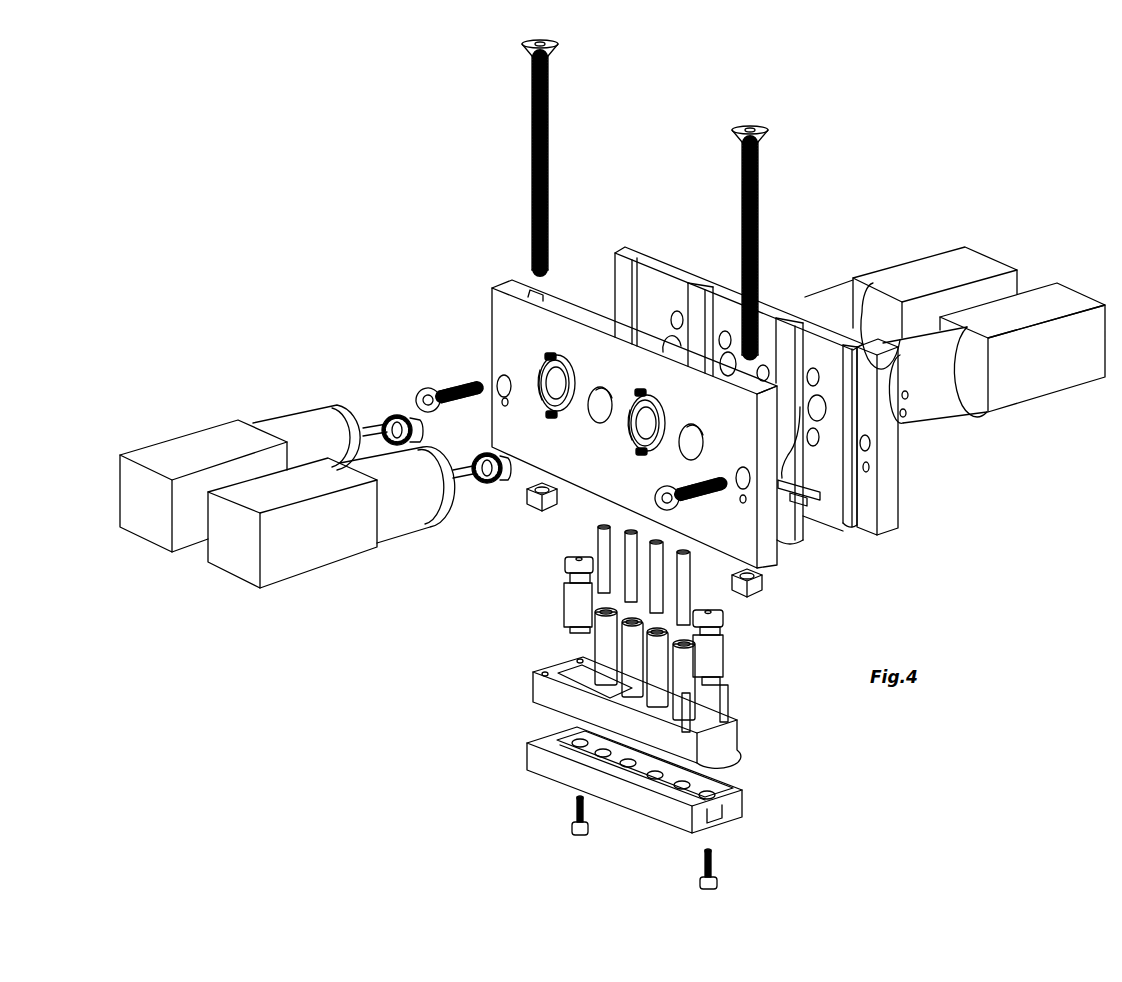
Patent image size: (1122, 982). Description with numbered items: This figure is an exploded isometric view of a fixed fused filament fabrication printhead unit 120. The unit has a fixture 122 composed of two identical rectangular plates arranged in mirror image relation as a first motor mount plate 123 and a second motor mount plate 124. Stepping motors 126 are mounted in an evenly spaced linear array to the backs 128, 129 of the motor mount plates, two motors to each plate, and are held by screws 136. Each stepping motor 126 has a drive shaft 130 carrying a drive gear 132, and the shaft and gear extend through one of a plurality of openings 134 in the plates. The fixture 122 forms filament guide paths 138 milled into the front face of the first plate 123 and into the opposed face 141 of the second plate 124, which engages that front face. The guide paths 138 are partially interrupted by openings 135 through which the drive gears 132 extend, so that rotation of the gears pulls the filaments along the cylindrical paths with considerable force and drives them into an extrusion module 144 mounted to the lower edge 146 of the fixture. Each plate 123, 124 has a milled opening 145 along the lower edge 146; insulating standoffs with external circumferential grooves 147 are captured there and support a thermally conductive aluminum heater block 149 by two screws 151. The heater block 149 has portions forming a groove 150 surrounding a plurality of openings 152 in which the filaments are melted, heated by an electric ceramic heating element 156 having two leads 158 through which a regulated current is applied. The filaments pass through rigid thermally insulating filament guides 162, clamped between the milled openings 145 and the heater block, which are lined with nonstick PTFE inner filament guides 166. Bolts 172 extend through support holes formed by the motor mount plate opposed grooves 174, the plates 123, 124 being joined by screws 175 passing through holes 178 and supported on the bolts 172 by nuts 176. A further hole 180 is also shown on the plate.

The fixed fused filament fabrication printhead unit 120 is at (893, 232).
The fixture 122 is at (487, 240).
The first motor mount plate 123 is at (562, 292).
The second motor mount plate 124 is at (490, 316).
The stepping motor 126 is at (612, 417).
The back of motor mount plate 128 is at (762, 283).
The back of motor mount plate 129 is at (622, 492).
The drive shaft 130 is at (370, 428).
The drive gear 132 is at (394, 415).
The opening 134 is at (543, 390).
The opening 135 is at (597, 393).
The screw 136 is at (556, 355).
The filament guide path 138 is at (590, 312).
The opposed face 141 is at (620, 318).
The extrusion module 144 is at (525, 630).
The milled opening 145 is at (822, 494).
The lower edge 146 is at (795, 512).
The external circumferential groove 147 is at (570, 580).
The heater block 149 is at (740, 803).
The groove 150 is at (712, 782).
The screw 151 is at (575, 810).
The opening 152 is at (575, 738).
The electric ceramic heating element 156 is at (736, 740).
The lead 158 is at (690, 712).
The thermally insulating filament guide 162 is at (600, 650).
The inner filament guide 166 is at (605, 552).
The bolt 172 is at (548, 90).
The opposed groove 174 is at (535, 293).
The screw 175 is at (444, 390).
The nut 176 is at (540, 512).
The hole 178 is at (508, 372).
The hole 180 is at (742, 465).